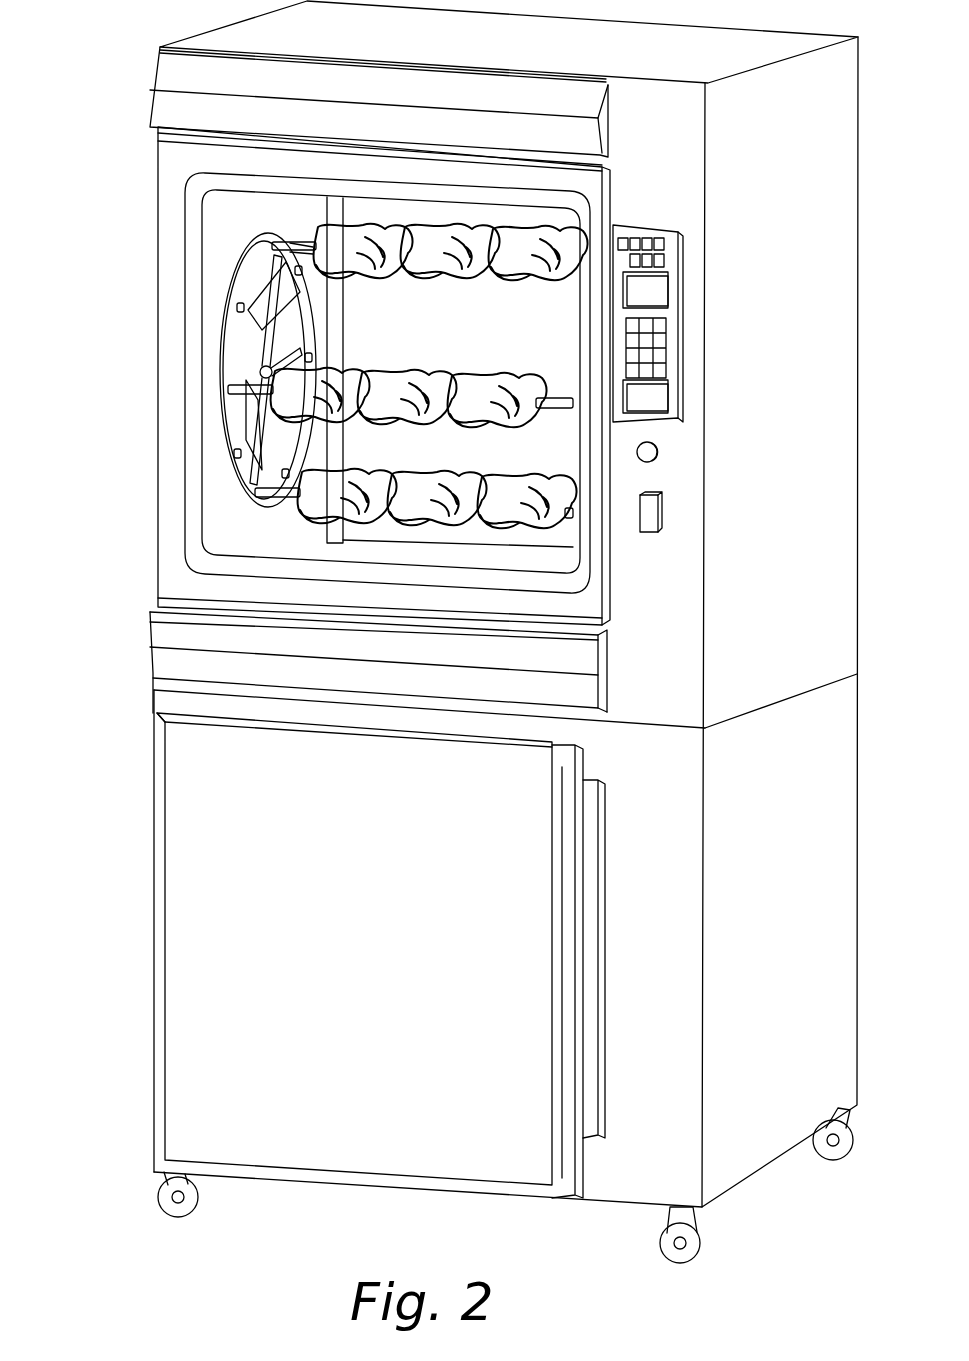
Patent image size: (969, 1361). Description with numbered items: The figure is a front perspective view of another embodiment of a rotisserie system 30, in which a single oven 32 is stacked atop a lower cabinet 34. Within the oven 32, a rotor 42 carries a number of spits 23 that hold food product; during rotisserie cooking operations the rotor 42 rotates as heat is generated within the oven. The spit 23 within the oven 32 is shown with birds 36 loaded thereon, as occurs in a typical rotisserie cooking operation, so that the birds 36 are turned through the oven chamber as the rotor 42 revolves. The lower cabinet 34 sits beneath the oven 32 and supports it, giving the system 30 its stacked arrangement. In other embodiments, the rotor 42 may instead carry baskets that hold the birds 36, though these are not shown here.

The rotisserie system 30 is at (122, 118).
The oven 32 is at (172, 165).
The spit 23 is at (265, 292).
The rotor 42 is at (227, 357).
The birds 36 is at (258, 440).
The lower cabinet 34 is at (175, 813).